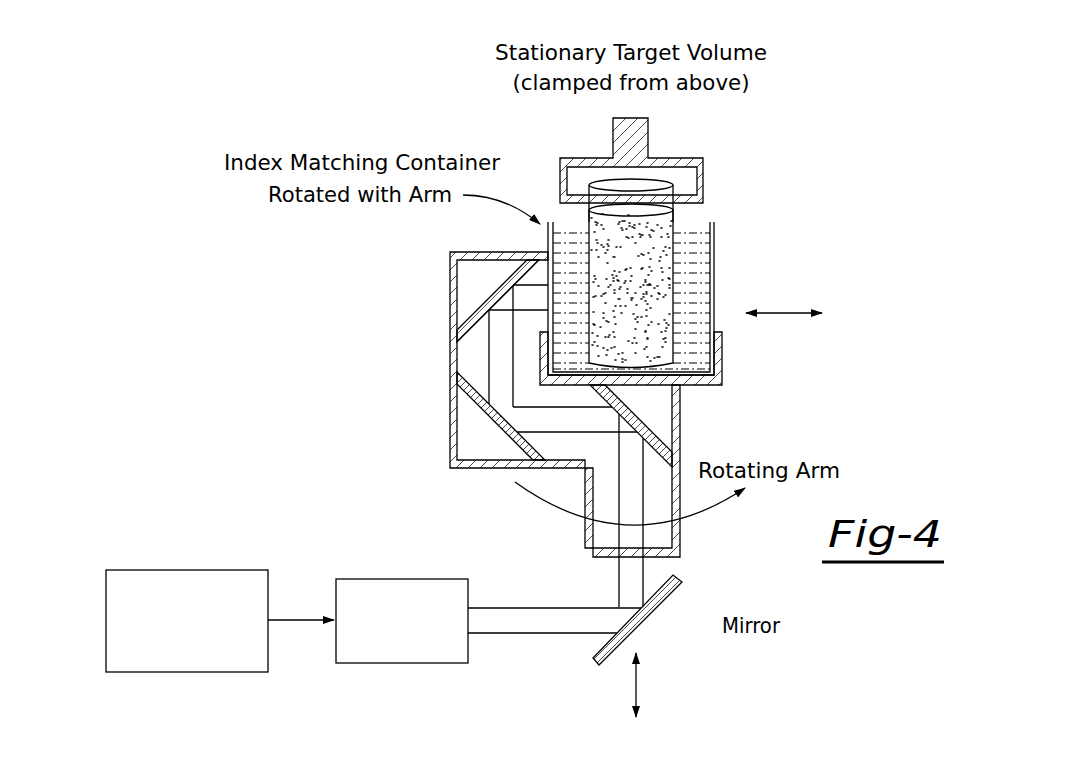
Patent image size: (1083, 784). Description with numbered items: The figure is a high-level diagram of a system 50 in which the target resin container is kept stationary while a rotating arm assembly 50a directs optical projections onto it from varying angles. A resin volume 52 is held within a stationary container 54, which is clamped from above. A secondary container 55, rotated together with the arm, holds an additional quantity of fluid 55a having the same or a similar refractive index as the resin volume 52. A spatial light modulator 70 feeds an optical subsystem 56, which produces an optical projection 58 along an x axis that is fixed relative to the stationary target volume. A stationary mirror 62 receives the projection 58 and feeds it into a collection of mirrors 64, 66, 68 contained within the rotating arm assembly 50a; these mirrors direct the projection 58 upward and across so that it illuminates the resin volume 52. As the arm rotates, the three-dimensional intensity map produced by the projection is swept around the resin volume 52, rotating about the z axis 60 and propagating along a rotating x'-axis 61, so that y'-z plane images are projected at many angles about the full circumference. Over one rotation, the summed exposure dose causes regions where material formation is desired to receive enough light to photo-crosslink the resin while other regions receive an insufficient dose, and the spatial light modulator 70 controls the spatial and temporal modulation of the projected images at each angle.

The system 50 is at (472, 141).
The rotating arm assembly 50a is at (450, 407).
The resin volume 52 is at (653, 205).
The stationary container 54 is at (673, 217).
The secondary container 55 is at (713, 278).
The fluid 55a is at (695, 257).
The optical subsystem 56 is at (370, 578).
The optical projection 58 is at (529, 618).
The z axis 60 is at (640, 681).
The rotating x'-axis 61 is at (792, 318).
The stationary mirror 62 is at (665, 590).
The mirror 64 is at (650, 440).
The mirror 66 is at (518, 438).
The mirror 68 is at (467, 326).
The spatial light modulator 70 is at (227, 569).